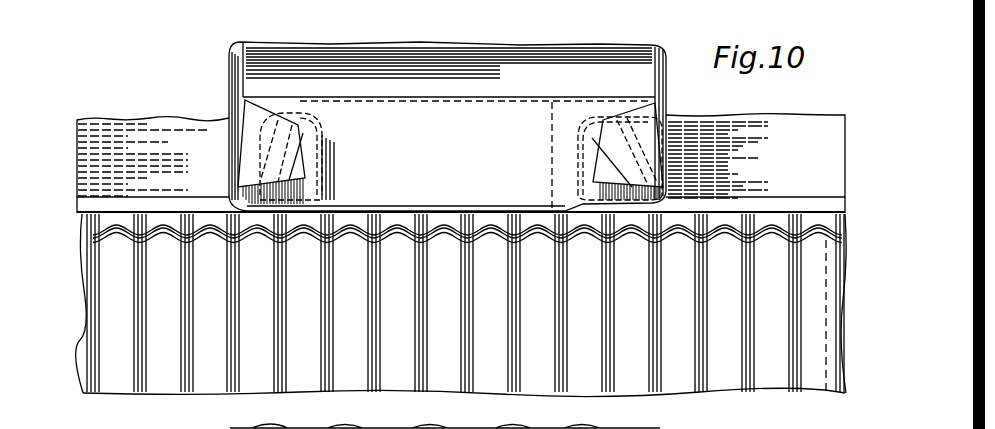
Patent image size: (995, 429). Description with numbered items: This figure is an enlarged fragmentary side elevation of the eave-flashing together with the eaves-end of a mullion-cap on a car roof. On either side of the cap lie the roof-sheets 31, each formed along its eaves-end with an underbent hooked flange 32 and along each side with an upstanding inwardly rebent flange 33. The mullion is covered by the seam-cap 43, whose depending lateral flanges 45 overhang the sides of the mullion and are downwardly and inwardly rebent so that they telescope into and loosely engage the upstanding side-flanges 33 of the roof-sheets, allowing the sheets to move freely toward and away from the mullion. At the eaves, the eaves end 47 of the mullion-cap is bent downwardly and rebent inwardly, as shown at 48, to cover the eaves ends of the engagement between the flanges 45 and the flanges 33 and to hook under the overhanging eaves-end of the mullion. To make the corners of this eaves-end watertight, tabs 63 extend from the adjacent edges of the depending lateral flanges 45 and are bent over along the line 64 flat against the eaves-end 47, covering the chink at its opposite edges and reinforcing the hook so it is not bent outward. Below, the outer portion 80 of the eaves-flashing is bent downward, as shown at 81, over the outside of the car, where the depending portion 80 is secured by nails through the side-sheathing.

The roof-sheet 31 is at (173, 140).
The underbent hooked flange 32 is at (160, 207).
The upstanding inwardly rebent flange 33 is at (322, 123).
The seam-cap 43 is at (413, 66).
The depending lateral flange 45 is at (233, 78).
The eaves end of mullion-cap 47 is at (449, 122).
The inwardly rebent portion 48 is at (474, 209).
The tab 63 is at (264, 128).
The line of bend 64 is at (234, 153).
The outer portion of eaves-flashing 80 is at (165, 349).
The downward bend of eaves-flashing 81 is at (89, 279).